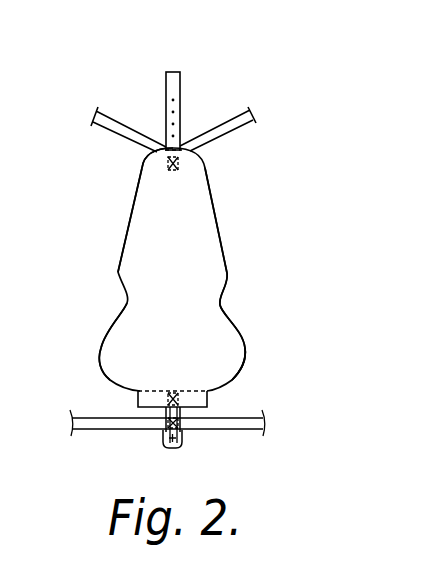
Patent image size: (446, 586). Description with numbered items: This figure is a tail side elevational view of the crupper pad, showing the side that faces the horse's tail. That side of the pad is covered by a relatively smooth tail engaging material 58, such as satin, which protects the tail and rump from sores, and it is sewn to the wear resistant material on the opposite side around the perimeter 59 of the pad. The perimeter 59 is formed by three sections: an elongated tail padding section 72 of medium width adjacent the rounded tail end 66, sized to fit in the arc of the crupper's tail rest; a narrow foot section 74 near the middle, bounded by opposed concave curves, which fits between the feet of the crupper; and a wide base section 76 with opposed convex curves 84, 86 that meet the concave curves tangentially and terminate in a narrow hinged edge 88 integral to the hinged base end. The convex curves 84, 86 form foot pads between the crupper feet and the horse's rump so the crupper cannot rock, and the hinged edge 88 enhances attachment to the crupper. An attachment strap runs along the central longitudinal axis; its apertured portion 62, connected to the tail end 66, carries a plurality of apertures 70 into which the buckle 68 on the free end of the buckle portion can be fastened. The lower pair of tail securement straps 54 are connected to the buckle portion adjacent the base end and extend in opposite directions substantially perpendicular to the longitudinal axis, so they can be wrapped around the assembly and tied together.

The lower pair of tail securement straps 54 is at (107, 423).
The smooth tail engaging material 58 is at (193, 188).
The perimeter 59 is at (118, 272).
The apertured portion 62 is at (166, 88).
The rounded tail end 66 is at (142, 168).
The buckle 68 is at (181, 446).
The apertures 70 is at (179, 87).
The tail padding section 72 is at (232, 215).
The foot section 74 is at (232, 305).
The base section 76 is at (267, 368).
The convex curve 84 is at (100, 353).
The convex curve 86 is at (247, 350).
The hinged edge 88 is at (207, 393).